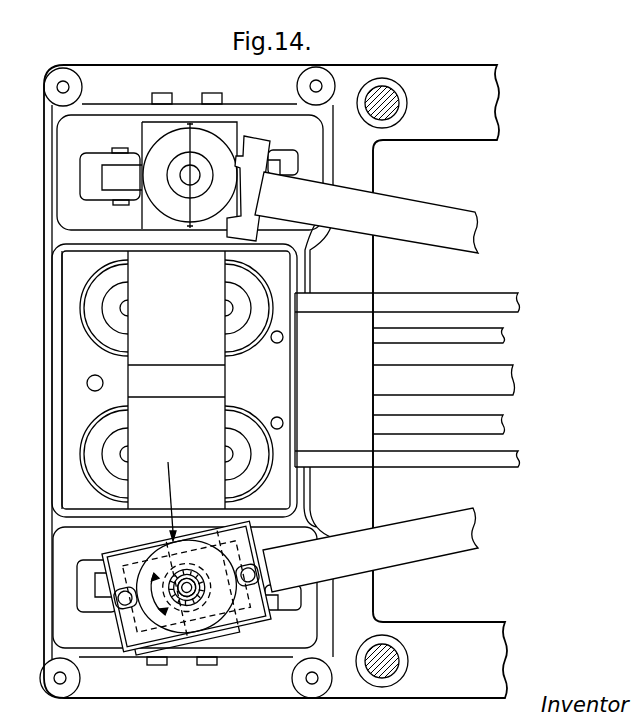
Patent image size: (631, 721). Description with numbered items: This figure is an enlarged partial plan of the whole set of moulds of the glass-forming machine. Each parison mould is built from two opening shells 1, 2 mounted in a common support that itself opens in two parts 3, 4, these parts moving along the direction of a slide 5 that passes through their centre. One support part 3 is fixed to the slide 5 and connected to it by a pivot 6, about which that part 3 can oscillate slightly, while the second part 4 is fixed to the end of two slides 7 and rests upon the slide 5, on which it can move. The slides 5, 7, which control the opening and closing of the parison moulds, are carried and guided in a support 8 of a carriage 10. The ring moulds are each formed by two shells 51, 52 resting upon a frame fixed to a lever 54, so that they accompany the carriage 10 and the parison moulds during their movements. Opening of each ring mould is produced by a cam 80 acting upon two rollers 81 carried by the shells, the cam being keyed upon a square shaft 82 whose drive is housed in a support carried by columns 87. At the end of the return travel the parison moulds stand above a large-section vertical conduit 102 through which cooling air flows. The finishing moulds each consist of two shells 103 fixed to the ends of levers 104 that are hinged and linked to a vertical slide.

The opening shell 1 is at (104, 381).
The opening shell 2 is at (249, 381).
The support part 3 is at (73, 380).
The support part 4 is at (265, 380).
The slide 5 is at (321, 381).
The pivot 6 is at (87, 383).
The slide 7 is at (439, 381).
The support 8 is at (334, 381).
The carriage 10 is at (440, 300).
The shell 51 is at (128, 553).
The shell 52 is at (240, 533).
The lever 54 is at (366, 382).
The cam 80 is at (189, 589).
The roller 81 is at (118, 610).
The square shaft 82 is at (192, 575).
The column 87 is at (392, 103).
The vertical conduit 102 is at (178, 321).
The shell 103 is at (197, 205).
The lever 104 is at (90, 160).